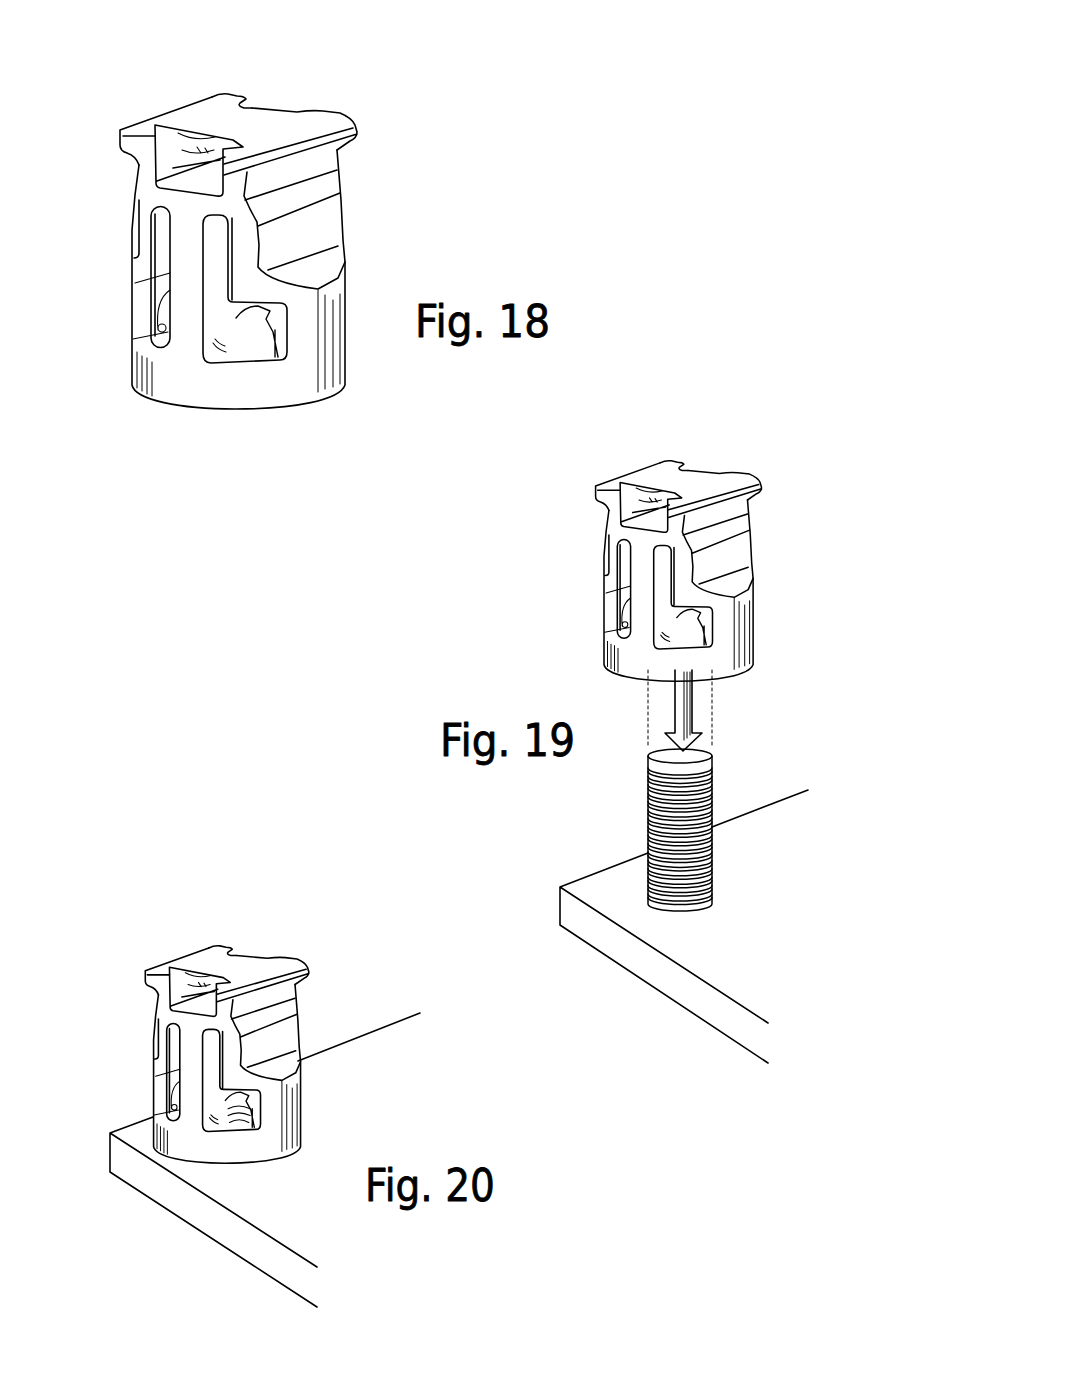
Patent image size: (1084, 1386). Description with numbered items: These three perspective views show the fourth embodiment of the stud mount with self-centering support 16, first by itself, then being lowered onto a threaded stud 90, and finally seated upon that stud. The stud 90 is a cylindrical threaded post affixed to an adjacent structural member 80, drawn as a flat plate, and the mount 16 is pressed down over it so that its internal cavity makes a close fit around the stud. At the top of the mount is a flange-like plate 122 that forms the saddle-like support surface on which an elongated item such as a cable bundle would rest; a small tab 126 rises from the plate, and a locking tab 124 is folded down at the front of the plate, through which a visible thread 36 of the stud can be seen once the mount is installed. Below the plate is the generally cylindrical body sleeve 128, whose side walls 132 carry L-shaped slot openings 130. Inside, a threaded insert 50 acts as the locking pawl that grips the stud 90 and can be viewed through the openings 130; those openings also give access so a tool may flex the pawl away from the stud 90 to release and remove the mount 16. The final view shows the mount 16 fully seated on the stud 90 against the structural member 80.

In FIG. 18, the nut assembly 16 is at (289, 82).
In FIG. 19, the nut assembly 16 is at (723, 434).
In FIG. 20, the nut assembly 16 is at (271, 921).
In FIG. 19, the thread 36 is at (650, 472).
In FIG. 20, the thread 36 is at (200, 957).
In FIG. 18, the threaded insert 50 is at (279, 357).
In FIG. 19, the threaded insert 50 is at (706, 645).
In FIG. 20, the threaded insert 50 is at (250, 1122).
In FIG. 19, the structural member 80 is at (587, 892).
In FIG. 20, the structural member 80 is at (197, 1172).
In FIG. 19, the threaded stud 90 is at (647, 805).
In FIG. 20, the threaded stud 90 is at (227, 1120).
In FIG. 18, the flange plate 122 is at (168, 114).
In FIG. 19, the flange plate 122 is at (627, 475).
In FIG. 20, the flange plate 122 is at (173, 960).
In FIG. 18, the locking tab 124 is at (157, 176).
In FIG. 19, the locking tab 124 is at (622, 517).
In FIG. 20, the locking tab 124 is at (170, 1003).
In FIG. 18, the tab 126 is at (230, 92).
In FIG. 19, the tab 126 is at (670, 470).
In FIG. 20, the tab 126 is at (218, 953).
In FIG. 18, the body sleeve 128 is at (185, 372).
In FIG. 19, the body sleeve 128 is at (637, 653).
In FIG. 20, the body sleeve 128 is at (183, 1143).
In FIG. 18, the slot opening 130 is at (152, 263).
In FIG. 19, the slot opening 130 is at (620, 575).
In FIG. 20, the slot opening 130 is at (170, 1060).
In FIG. 18, the side wall 132 is at (131, 218).
In FIG. 19, the side wall 132 is at (607, 555).
In FIG. 20, the side wall 132 is at (157, 1040).